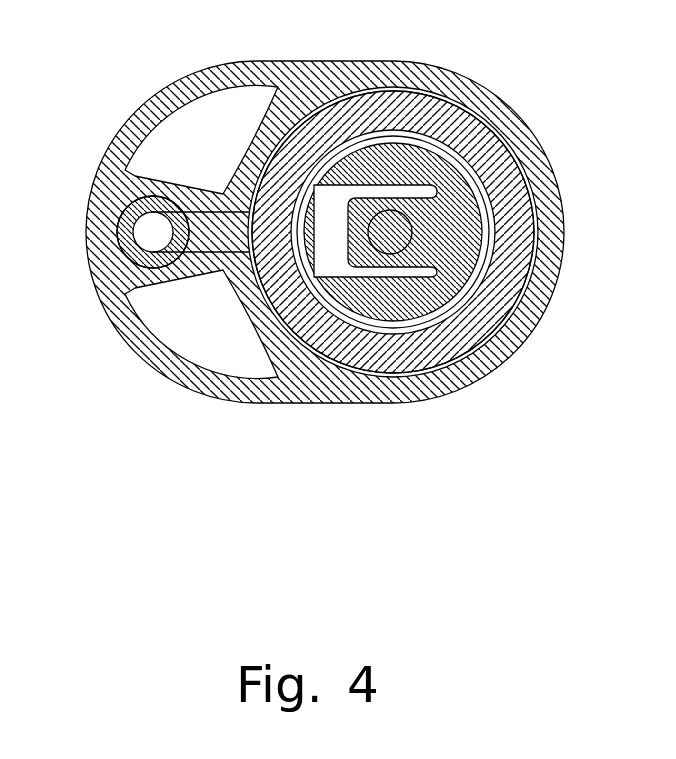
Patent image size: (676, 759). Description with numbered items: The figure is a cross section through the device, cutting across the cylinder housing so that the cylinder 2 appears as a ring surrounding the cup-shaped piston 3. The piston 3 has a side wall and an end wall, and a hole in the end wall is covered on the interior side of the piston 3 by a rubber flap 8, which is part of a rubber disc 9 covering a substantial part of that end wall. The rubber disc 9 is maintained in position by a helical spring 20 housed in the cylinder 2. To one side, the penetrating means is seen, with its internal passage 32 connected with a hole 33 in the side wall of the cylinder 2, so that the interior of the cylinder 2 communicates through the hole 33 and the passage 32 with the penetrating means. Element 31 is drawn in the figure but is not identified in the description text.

The cylinder 2 is at (547, 190).
The cup-shaped piston 3 is at (412, 372).
The rubber flap 8 is at (420, 213).
The rubber disc 9 is at (452, 338).
The helical spring 20 is at (460, 76).
The pin 31 is at (110, 257).
The internal passage 32 is at (94, 187).
The hole 33 is at (304, 112).